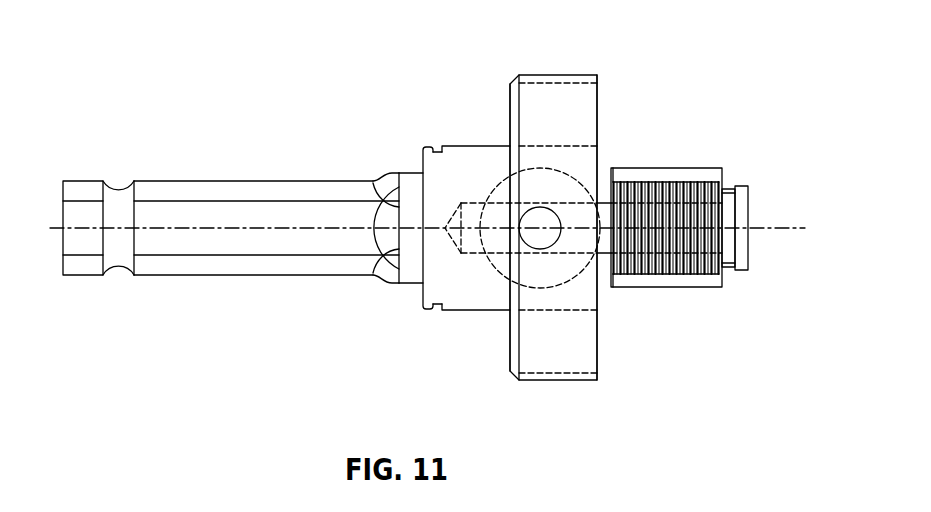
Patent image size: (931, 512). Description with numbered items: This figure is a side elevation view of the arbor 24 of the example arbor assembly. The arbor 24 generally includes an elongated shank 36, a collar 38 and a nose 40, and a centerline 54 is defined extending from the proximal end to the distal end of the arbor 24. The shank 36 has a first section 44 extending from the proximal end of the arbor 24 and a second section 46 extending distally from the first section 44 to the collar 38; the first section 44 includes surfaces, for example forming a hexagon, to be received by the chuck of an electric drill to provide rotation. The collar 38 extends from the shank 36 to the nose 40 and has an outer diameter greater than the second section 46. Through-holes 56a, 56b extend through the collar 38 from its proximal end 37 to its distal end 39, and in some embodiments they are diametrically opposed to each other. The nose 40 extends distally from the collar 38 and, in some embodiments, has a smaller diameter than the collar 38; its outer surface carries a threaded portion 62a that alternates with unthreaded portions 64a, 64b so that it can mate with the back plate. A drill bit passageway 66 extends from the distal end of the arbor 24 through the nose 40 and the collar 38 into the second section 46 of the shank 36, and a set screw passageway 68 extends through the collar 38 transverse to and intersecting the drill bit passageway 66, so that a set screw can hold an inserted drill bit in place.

The arbor 24 is at (207, 116).
The shank 36 is at (238, 173).
The first section 44 is at (202, 265).
The second section 46 is at (487, 312).
The drill bit passageway 66 is at (477, 200).
The set screw passageway 68 is at (540, 211).
The collar 38 is at (572, 392).
The proximal end of the collar 37 is at (508, 349).
The distal end of the collar 39 is at (598, 342).
The through-hole 56a is at (563, 83).
The through-hole 56b is at (526, 374).
The nose 40 is at (688, 153).
The unthreaded portion 64a is at (641, 168).
The unthreaded portion 64b is at (645, 287).
The threaded portion 62a is at (692, 200).
The centerline 54 is at (778, 229).